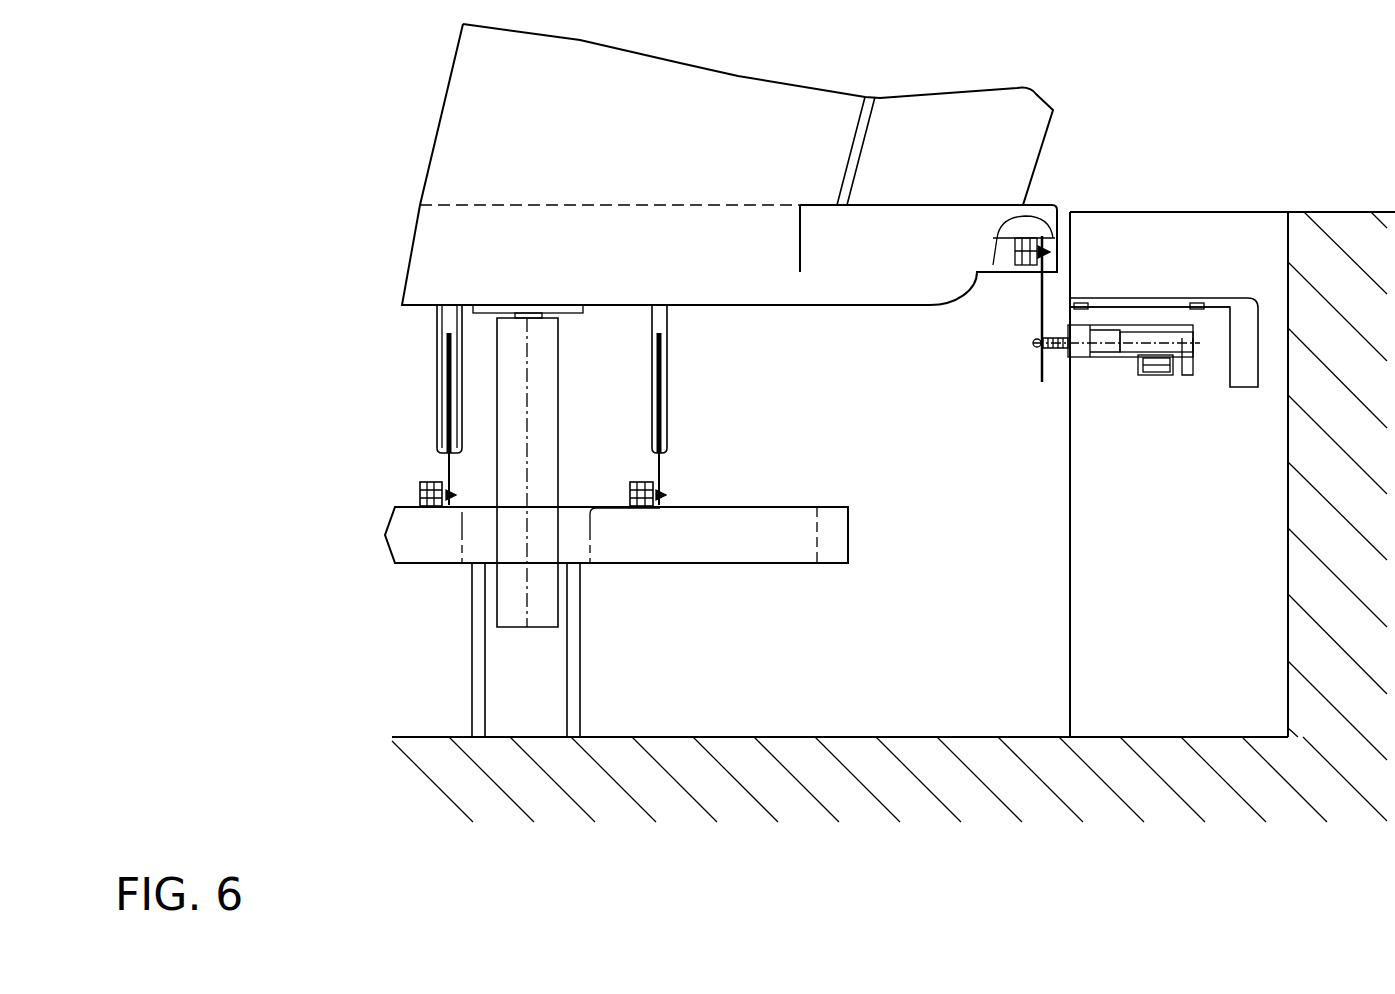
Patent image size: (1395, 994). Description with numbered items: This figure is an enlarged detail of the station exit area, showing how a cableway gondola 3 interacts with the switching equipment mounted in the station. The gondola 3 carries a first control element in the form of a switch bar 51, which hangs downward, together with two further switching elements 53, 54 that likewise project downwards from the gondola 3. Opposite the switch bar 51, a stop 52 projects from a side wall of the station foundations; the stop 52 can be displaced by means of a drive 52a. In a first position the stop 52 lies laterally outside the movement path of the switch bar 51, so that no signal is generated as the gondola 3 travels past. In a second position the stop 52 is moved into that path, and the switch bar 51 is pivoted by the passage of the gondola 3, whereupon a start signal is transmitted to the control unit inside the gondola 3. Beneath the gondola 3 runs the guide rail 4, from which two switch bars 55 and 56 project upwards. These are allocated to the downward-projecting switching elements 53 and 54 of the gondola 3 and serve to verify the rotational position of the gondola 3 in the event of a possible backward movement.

The cableway gondola 3 is at (557, 136).
The guide rail 4 is at (473, 650).
The switch bar 51 is at (1038, 317).
The stop 52 is at (1062, 350).
The drive 52a is at (1157, 377).
The switching element 53 is at (437, 383).
The switching element 54 is at (670, 378).
The switch bar 55 is at (446, 467).
The switch bar 56 is at (662, 467).